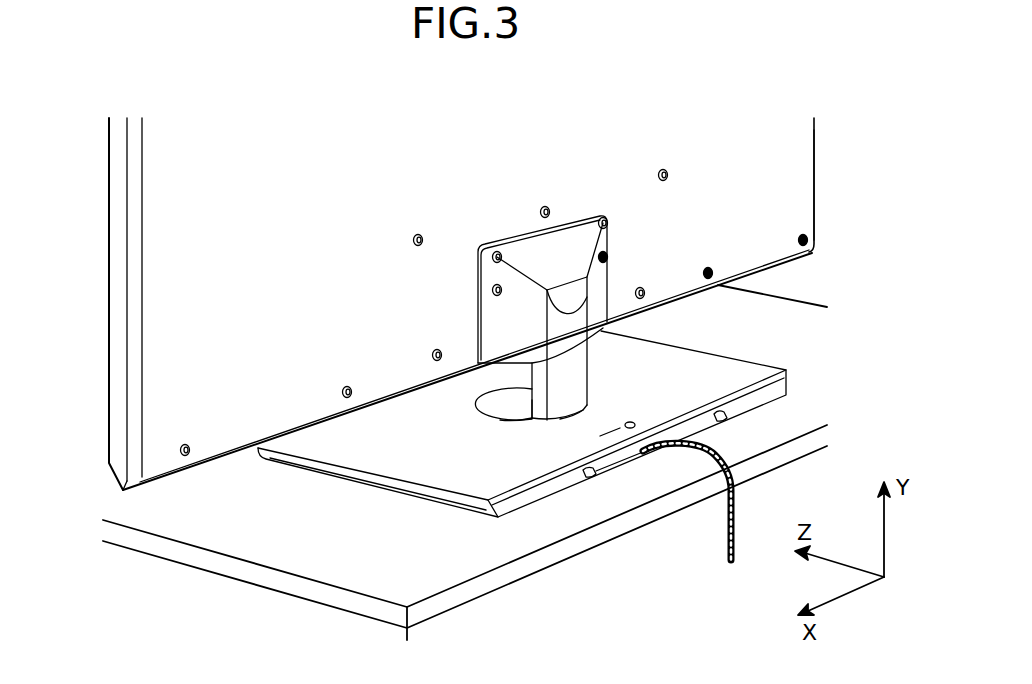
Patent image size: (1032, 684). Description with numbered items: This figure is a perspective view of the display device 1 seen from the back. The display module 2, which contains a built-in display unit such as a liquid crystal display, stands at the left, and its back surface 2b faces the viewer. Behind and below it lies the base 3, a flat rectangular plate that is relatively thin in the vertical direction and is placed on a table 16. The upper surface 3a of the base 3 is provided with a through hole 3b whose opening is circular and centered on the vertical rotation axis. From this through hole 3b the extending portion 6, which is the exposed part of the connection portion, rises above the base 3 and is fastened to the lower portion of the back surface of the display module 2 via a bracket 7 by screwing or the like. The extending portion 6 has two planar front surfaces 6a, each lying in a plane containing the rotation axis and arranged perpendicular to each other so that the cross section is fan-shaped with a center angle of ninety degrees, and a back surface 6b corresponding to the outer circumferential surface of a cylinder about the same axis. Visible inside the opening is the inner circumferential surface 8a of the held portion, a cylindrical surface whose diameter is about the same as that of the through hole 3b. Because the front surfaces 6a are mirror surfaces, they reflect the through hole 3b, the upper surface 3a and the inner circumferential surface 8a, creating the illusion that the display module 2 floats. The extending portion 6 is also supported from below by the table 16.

The display device 1 is at (756, 90).
The display module 2 is at (109, 190).
The rear surface of display (rear cabinet 2c) 2b is at (788, 146).
The base 3 is at (789, 381).
The upper surface 3a is at (605, 433).
The through hole 3b is at (514, 416).
The extending portion 6 is at (582, 378).
The front surfaces 6a is at (544, 413).
The back surface 6b is at (562, 398).
The bracket 7 is at (568, 242).
The inner circumferential surface 8a is at (502, 410).
The table 16 is at (272, 533).